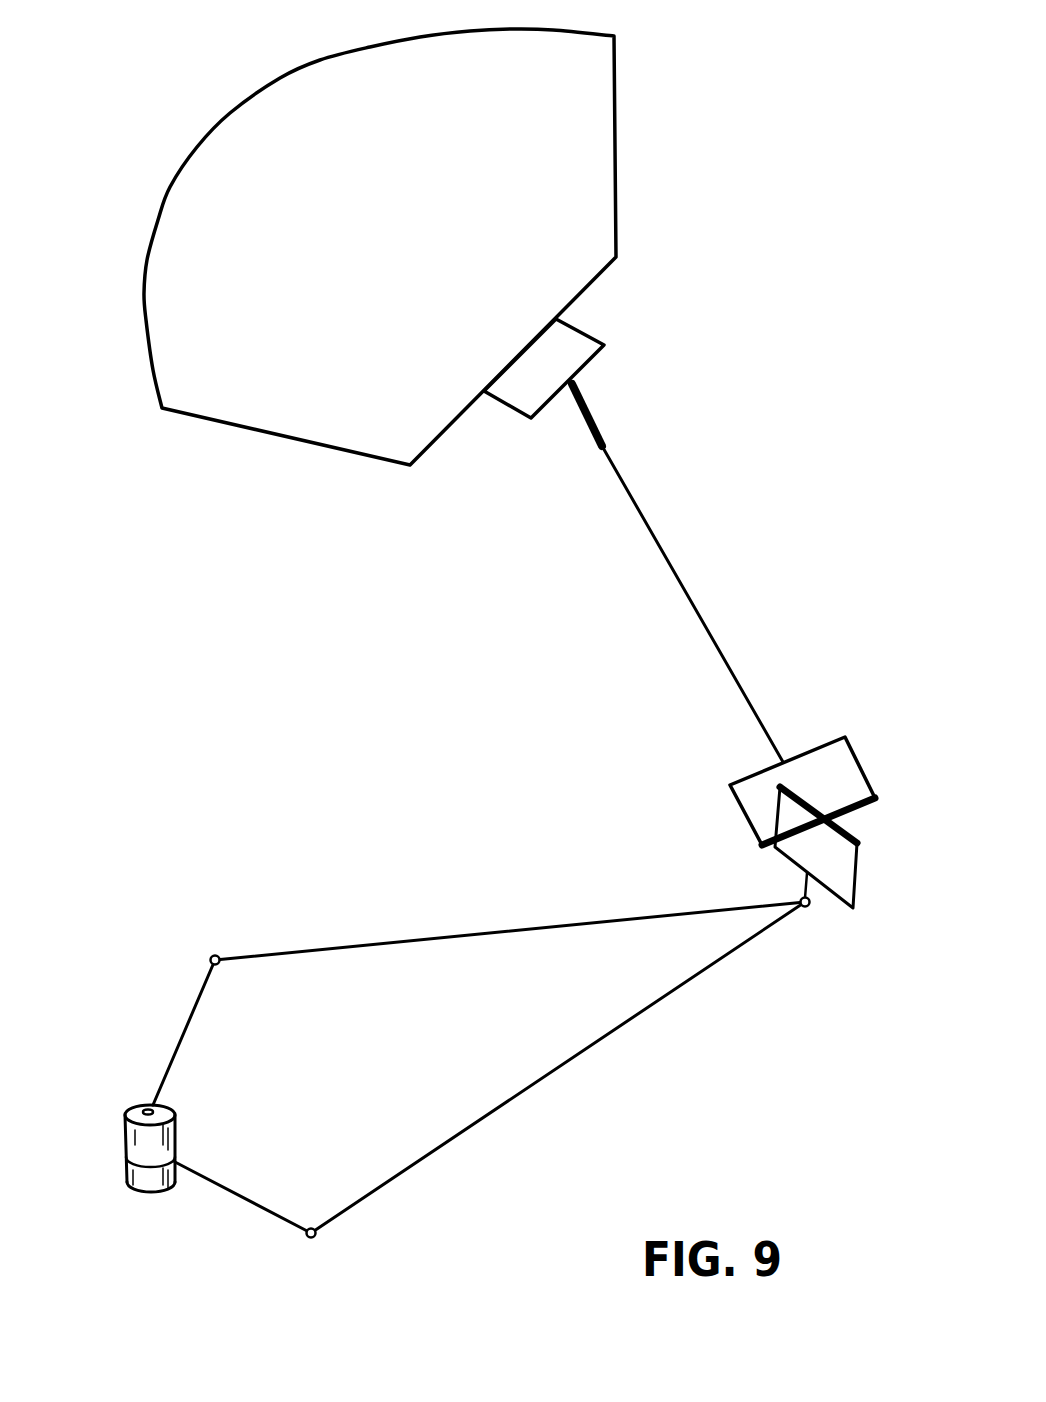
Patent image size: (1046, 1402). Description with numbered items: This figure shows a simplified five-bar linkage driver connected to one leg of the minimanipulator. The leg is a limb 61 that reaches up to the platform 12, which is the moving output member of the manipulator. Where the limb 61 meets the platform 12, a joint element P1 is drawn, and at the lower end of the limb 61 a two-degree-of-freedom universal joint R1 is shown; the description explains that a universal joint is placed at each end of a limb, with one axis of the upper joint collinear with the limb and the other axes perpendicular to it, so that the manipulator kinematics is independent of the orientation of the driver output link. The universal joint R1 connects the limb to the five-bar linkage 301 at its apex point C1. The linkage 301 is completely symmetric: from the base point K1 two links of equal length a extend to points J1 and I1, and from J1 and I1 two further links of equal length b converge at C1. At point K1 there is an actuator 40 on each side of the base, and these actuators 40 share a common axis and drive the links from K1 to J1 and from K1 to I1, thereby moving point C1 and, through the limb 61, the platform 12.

The platform 12 is at (600, 168).
The pivot plate on body P1 is at (556, 382).
The limb 61 is at (683, 583).
The universal joint plates R1 is at (812, 822).
The joint point C1 is at (810, 905).
The joint point J1 is at (214, 954).
The point K1 is at (155, 1108).
The joint point I1 is at (310, 1240).
The parallelogram linkage 301 is at (430, 915).
The actuator 40 is at (125, 1125).